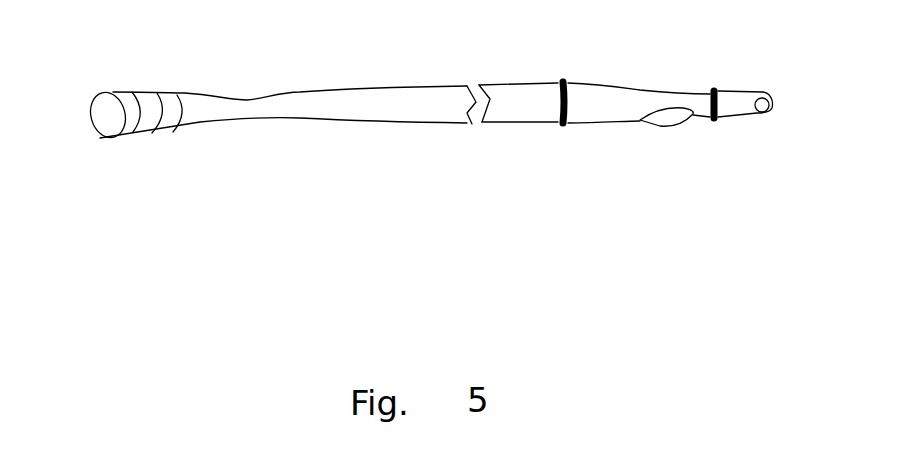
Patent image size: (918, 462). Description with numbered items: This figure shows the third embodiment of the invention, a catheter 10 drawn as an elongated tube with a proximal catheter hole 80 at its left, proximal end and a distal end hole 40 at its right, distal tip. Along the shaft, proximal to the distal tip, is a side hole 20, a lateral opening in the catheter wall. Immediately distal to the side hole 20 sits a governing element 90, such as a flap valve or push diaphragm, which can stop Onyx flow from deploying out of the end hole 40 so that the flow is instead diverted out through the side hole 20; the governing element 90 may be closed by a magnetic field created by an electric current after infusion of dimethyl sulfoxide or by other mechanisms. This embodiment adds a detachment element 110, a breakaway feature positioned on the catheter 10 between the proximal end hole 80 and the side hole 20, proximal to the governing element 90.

The catheter 10 is at (202, 120).
The proximal catheter hole 80 is at (107, 113).
The detachment element 110 is at (568, 70).
The side hole 20 is at (662, 120).
The governing element 90 is at (712, 123).
The distal end hole 40 is at (772, 108).